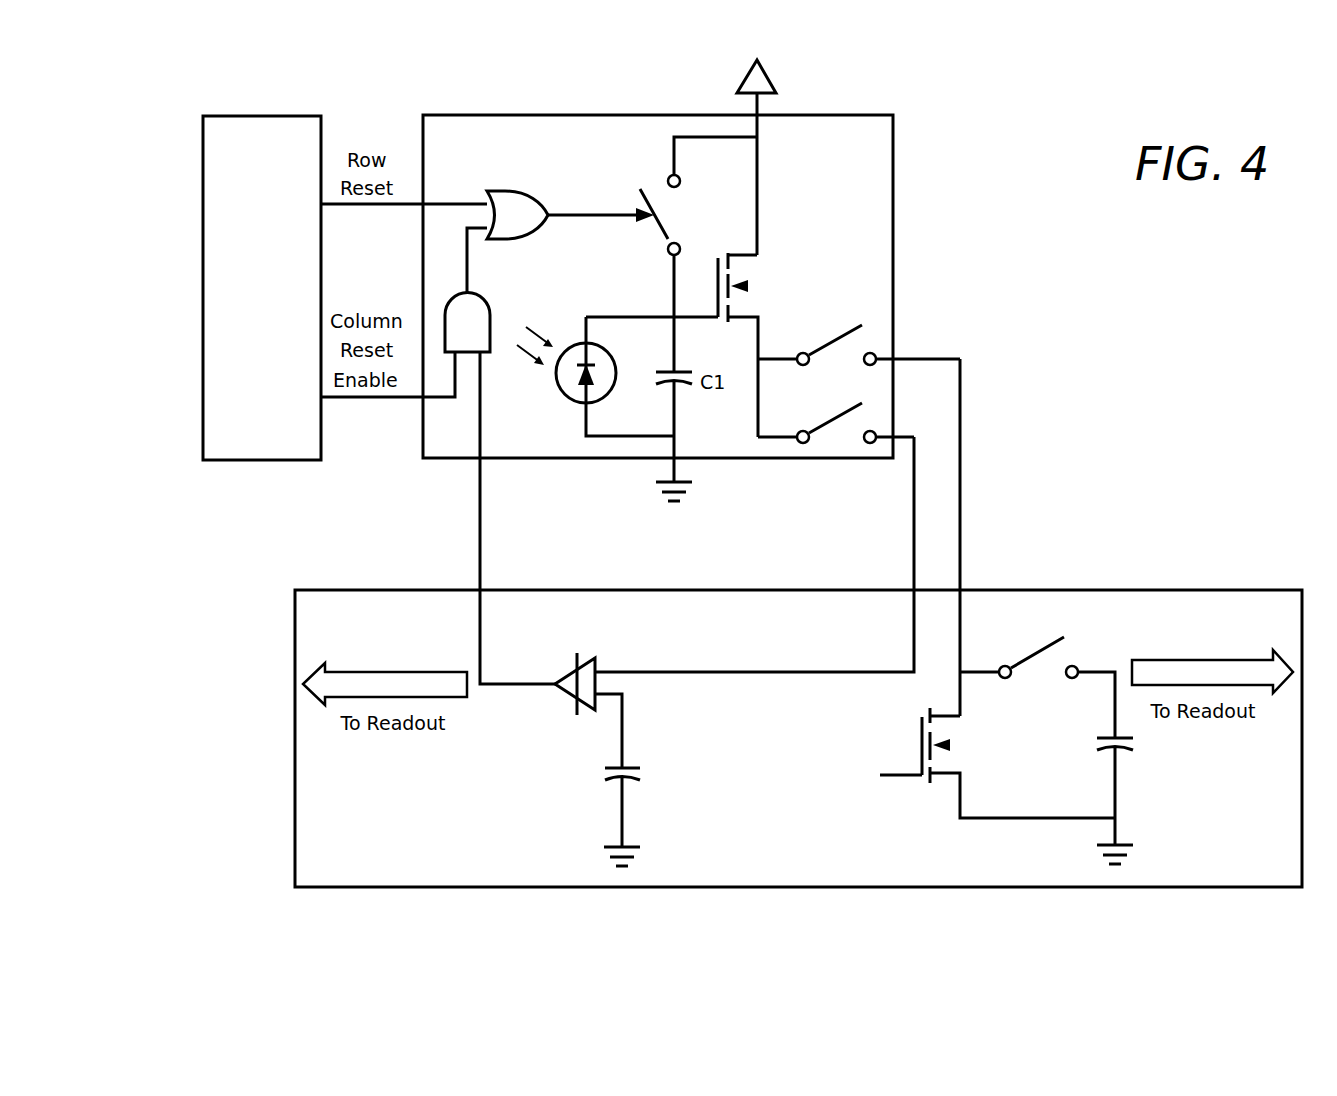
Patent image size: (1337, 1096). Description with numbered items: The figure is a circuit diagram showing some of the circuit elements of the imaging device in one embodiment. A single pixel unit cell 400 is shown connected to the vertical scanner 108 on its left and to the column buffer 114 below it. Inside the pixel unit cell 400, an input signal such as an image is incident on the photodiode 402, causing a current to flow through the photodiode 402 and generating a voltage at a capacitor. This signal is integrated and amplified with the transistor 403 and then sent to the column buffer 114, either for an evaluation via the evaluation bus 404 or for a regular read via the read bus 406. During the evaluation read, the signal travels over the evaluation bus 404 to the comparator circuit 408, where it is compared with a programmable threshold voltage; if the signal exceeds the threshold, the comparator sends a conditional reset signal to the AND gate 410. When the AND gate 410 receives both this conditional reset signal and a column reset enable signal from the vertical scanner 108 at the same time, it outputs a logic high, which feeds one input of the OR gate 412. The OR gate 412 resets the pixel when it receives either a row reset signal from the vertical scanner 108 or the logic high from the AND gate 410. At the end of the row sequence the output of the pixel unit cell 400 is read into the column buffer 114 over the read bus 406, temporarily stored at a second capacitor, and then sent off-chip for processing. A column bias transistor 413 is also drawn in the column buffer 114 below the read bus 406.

The vertical scanner 108 is at (258, 116).
The pixel unit cell 400 is at (462, 115).
The OR gate 412 is at (548, 198).
The transistor 403 is at (757, 243).
The AND gate 410 is at (458, 293).
The photodiode 402 is at (570, 400).
The read bus 406 is at (960, 405).
The evaluation bus 404 is at (914, 478).
The column buffer 114 is at (1205, 590).
The comparator circuit 408 is at (568, 693).
The column bias transistor 413 is at (925, 790).